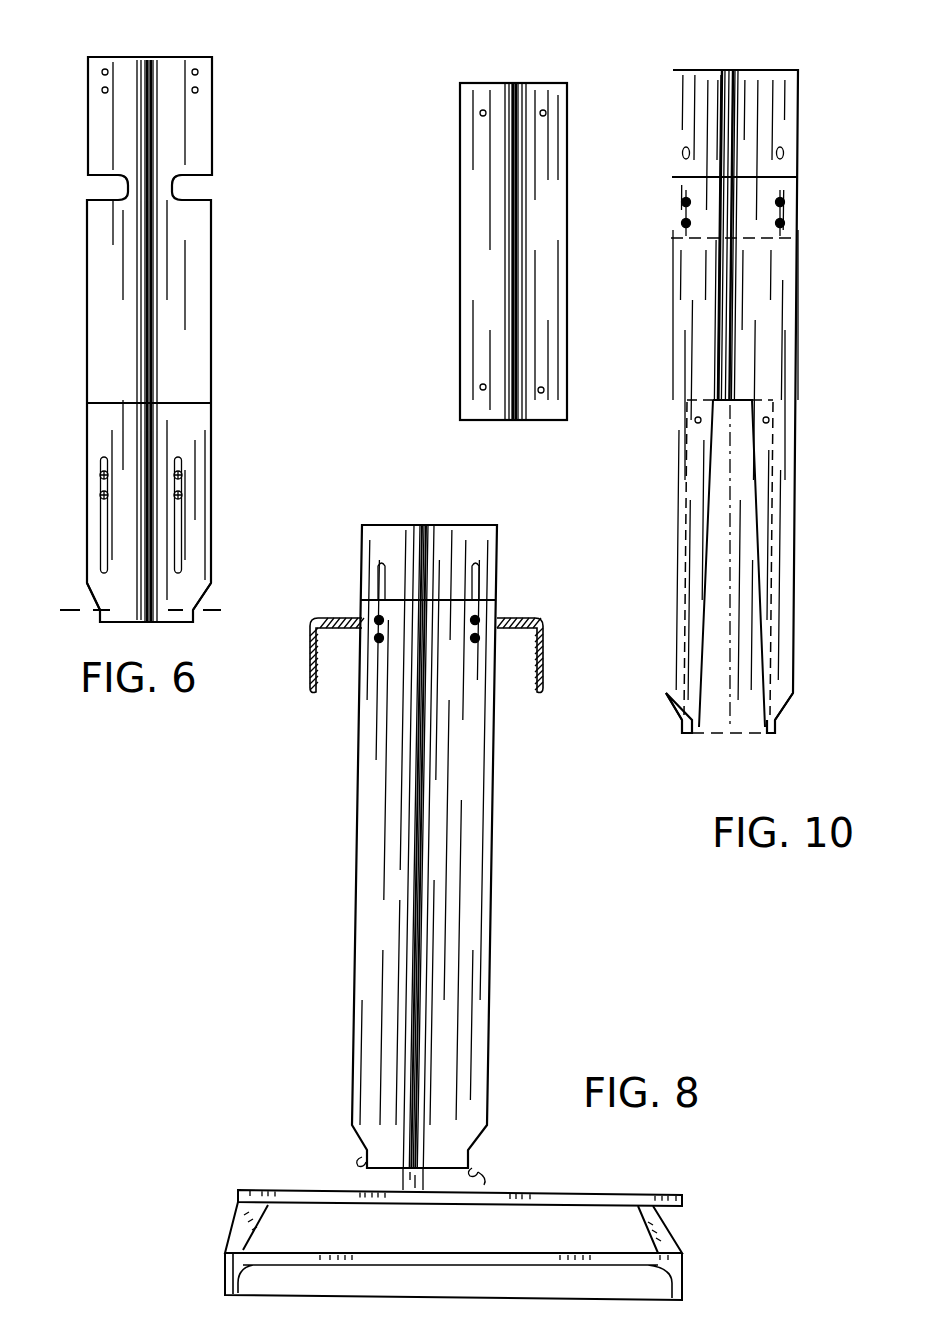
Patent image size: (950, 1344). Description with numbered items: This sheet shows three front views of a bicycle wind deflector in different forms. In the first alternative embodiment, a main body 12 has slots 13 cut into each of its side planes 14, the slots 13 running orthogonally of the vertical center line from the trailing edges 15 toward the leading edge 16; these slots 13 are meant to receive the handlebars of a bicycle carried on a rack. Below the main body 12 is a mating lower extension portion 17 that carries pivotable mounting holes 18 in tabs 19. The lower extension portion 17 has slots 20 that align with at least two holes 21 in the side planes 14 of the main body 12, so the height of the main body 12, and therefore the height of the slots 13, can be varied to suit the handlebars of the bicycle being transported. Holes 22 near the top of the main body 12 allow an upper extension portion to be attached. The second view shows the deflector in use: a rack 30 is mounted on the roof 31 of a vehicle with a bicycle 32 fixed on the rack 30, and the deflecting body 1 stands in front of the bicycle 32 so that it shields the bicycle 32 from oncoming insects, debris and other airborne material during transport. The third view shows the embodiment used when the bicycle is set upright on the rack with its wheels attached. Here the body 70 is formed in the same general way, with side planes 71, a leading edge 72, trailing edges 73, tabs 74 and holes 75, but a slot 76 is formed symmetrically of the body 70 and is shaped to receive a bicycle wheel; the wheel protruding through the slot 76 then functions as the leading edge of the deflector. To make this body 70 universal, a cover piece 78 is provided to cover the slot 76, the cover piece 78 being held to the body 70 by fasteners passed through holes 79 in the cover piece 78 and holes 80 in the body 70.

In FIG. 8, the deflecting body 1 is at (490, 940).
In FIG. 6, the main body 12 is at (88, 237).
In FIG. 6, the slots 13 is at (100, 178).
In FIG. 6, the side planes 14 is at (96, 124).
In FIG. 6, the trailing edges 15 is at (88, 143).
In FIG. 6, the leading edge 16 is at (152, 68).
In FIG. 6, the lower extension portion 17 is at (211, 528).
In FIG. 6, the pivotable mounting holes 18 is at (82, 612).
In FIG. 6, the tabs 19 is at (98, 608).
In FIG. 6, the slots 20 is at (103, 458).
In FIG. 6, the holes 21 is at (104, 495).
In FIG. 6, the holes 22 is at (105, 69).
In FIG. 8, the rack 30 is at (604, 1190).
In FIG. 8, the roof 31 is at (682, 1270).
In FIG. 8, the bicycle 32 is at (543, 668).
In FIG. 10, the body 70 is at (668, 362).
In FIG. 10, the side planes 71 is at (783, 320).
In FIG. 10, the leading edge 72 is at (733, 282).
In FIG. 10, the trailing edges 73 is at (797, 263).
In FIG. 10, the tabs 74 is at (684, 733).
In FIG. 10, the holes 75 is at (680, 718).
In FIG. 10, the slot 76 is at (699, 730).
In FIG. 10, the cover piece 78 is at (557, 243).
In FIG. 10, the holes 79 is at (546, 114).
In FIG. 10, the holes 80 is at (769, 418).